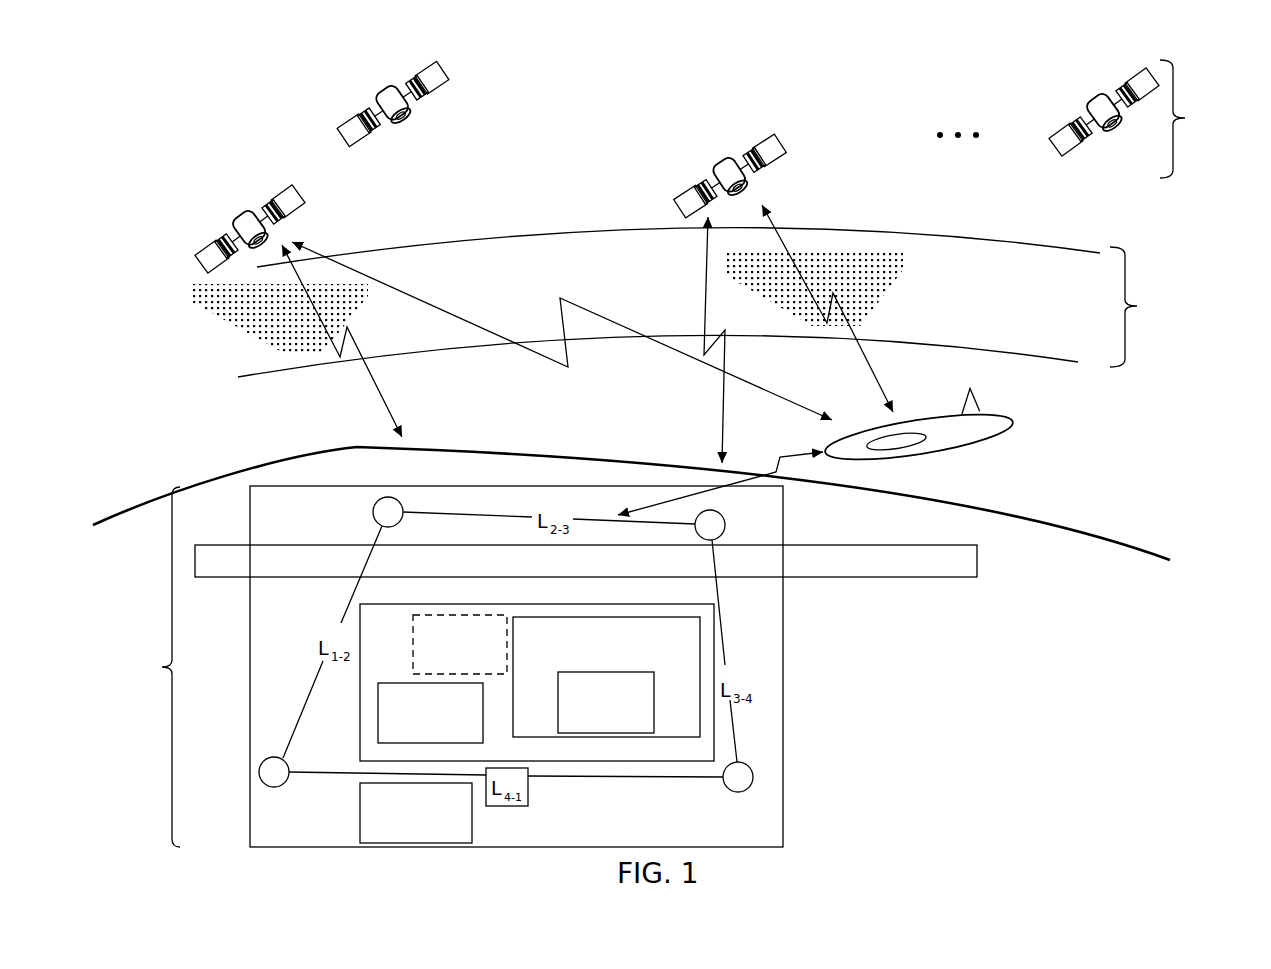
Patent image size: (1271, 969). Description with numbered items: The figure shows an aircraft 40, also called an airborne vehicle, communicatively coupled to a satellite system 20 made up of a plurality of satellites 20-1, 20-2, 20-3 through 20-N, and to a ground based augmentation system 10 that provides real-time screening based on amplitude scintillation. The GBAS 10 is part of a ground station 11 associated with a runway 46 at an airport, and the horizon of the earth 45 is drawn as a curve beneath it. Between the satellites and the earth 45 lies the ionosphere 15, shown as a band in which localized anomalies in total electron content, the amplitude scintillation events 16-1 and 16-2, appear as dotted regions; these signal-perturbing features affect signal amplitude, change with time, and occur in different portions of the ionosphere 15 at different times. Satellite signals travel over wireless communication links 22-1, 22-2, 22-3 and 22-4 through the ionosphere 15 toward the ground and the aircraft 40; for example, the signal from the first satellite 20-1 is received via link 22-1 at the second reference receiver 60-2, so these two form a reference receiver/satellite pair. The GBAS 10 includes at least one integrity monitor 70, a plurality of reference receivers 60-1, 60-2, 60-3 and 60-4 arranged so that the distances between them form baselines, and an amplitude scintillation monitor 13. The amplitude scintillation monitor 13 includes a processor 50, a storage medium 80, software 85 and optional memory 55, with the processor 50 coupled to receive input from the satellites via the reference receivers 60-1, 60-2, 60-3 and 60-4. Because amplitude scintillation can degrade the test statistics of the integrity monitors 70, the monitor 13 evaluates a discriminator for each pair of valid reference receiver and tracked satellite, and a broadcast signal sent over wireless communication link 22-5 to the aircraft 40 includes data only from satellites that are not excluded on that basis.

The ground based augmentation system (GBAS) 10 is at (308, 541).
The ground station 11 is at (156, 667).
The amplitude scintillation monitor 13 is at (398, 647).
The ionosphere 15 is at (707, 302).
The amplitude scintillation event 16-1 is at (190, 300).
The amplitude scintillation event 16-2 is at (890, 280).
The satellite system 20 is at (705, 167).
The first satellite 20-1 is at (270, 187).
The satellite 20-2 is at (437, 80).
The satellite 20-3 is at (777, 147).
The satellite 20-N is at (1077, 153).
The wireless communication link 22-1 is at (382, 390).
The wireless communication link 22-2 is at (797, 407).
The wireless communication link 22-3 is at (705, 270).
The wireless communication link 22-4 is at (875, 373).
The wireless communication link 22-5 is at (762, 466).
The aircraft 40 is at (985, 441).
The earth 45 is at (1093, 542).
The runway 46 is at (878, 578).
The processor 50 is at (445, 741).
The memory 55 is at (474, 671).
The first reference receiver 60-1 is at (259, 772).
The second reference receiver 60-2 is at (388, 497).
The third reference receiver 60-3 is at (725, 525).
The fourth reference receiver 60-4 is at (753, 777).
The monitor 70 is at (430, 839).
The storage medium 80 is at (621, 671).
The software 85 is at (621, 727).